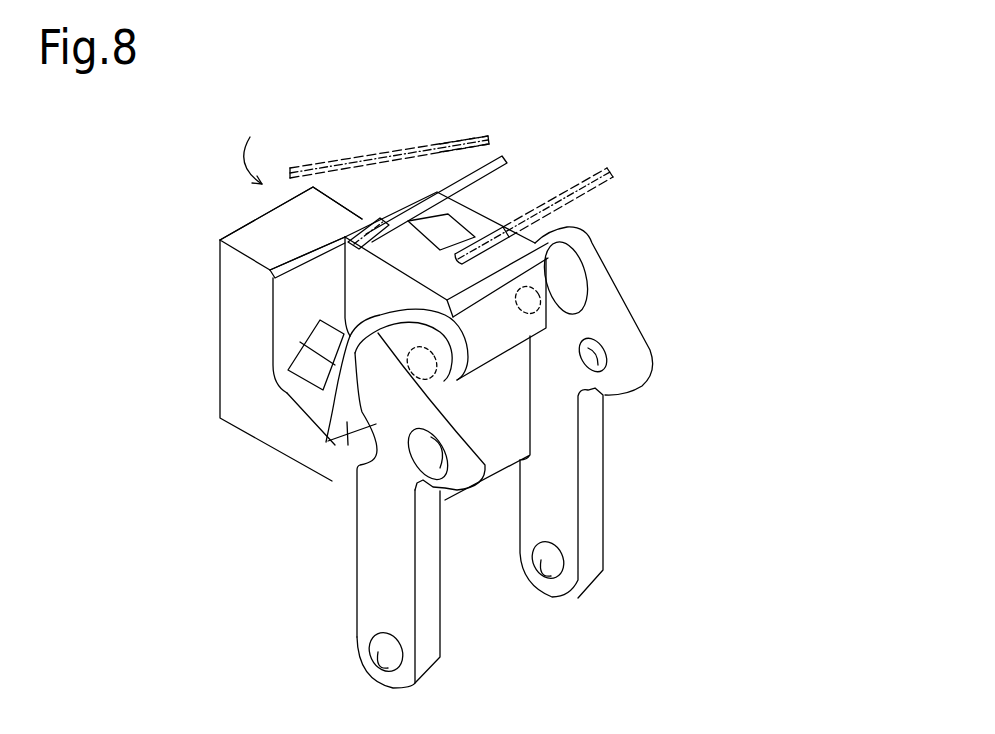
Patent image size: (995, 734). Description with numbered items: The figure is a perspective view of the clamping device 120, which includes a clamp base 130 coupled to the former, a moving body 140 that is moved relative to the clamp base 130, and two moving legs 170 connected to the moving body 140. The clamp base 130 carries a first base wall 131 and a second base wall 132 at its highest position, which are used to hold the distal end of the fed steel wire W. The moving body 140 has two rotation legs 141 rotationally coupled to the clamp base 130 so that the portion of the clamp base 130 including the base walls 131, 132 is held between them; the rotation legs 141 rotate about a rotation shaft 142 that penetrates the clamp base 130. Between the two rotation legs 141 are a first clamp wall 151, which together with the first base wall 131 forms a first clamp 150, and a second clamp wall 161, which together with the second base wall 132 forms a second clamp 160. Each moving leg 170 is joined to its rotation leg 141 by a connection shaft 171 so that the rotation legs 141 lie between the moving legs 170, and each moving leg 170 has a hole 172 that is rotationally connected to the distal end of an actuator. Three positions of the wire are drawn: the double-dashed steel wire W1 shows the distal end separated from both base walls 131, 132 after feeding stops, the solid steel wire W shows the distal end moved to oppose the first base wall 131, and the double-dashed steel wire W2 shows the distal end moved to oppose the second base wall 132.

The clamping device 120 is at (757, 145).
The clamp base 130 is at (223, 368).
The first base wall 131 is at (362, 228).
The second base wall 132 is at (497, 221).
The moving body 140 is at (290, 393).
The rotation leg 141 is at (563, 255).
The rotation shaft 142 is at (330, 433).
The first clamp 150 is at (314, 291).
The first clamp wall 151 is at (318, 325).
The second clamp 160 is at (522, 153).
The second clamp wall 161 is at (452, 226).
The moving leg 170 is at (363, 585).
The connection shaft 171 is at (548, 318).
The hole 172 is at (383, 650).
The steel wire W is at (493, 158).
The steel wire W1 is at (352, 160).
The steel wire W2 is at (592, 180).